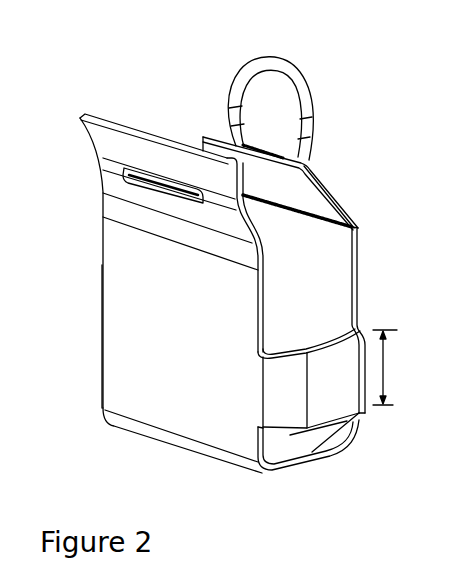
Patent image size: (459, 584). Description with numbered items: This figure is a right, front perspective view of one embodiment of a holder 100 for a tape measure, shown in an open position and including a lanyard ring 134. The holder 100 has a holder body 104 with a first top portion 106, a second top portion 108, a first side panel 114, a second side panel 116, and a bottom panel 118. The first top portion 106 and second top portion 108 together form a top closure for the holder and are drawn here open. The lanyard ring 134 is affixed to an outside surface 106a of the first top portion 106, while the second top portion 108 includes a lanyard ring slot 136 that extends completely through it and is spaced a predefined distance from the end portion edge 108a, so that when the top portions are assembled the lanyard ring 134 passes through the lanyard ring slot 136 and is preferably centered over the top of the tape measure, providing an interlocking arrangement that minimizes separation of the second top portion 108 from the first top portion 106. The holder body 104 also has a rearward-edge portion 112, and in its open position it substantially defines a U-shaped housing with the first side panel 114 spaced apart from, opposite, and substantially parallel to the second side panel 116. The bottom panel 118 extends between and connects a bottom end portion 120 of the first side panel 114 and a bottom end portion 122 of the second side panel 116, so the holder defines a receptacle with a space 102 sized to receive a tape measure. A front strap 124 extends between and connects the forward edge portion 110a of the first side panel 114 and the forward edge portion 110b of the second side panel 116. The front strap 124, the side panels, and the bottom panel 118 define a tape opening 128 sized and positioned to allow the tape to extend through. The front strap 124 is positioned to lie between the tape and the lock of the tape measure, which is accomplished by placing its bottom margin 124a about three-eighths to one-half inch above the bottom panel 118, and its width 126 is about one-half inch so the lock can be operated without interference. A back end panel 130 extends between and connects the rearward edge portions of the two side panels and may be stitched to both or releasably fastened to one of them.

The holder 100 is at (80, 100).
The space 102 is at (276, 228).
The holder body 104 is at (458, 230).
The first top portion 106 is at (328, 191).
The outside surface 106a is at (327, 177).
The second top portion 108 is at (105, 143).
The end portion edge 108a is at (173, 142).
The forward edge portion 110a is at (258, 305).
The forward edge portion 110b is at (347, 297).
The rearward-edge portion 112 is at (105, 247).
The first side panel 114 is at (332, 275).
The second side panel 116 is at (120, 333).
The bottom panel 118 is at (313, 446).
The bottom end portion 120 is at (357, 432).
The bottom end portion 122 is at (167, 420).
The front strap 124 is at (352, 421).
The bottom margin 124a is at (352, 440).
The width 126 is at (387, 369).
The tape opening 128 is at (293, 442).
The back end panel 130 is at (409, 411).
The lanyard ring 134 is at (300, 92).
The lanyard ring slot 136 is at (153, 176).